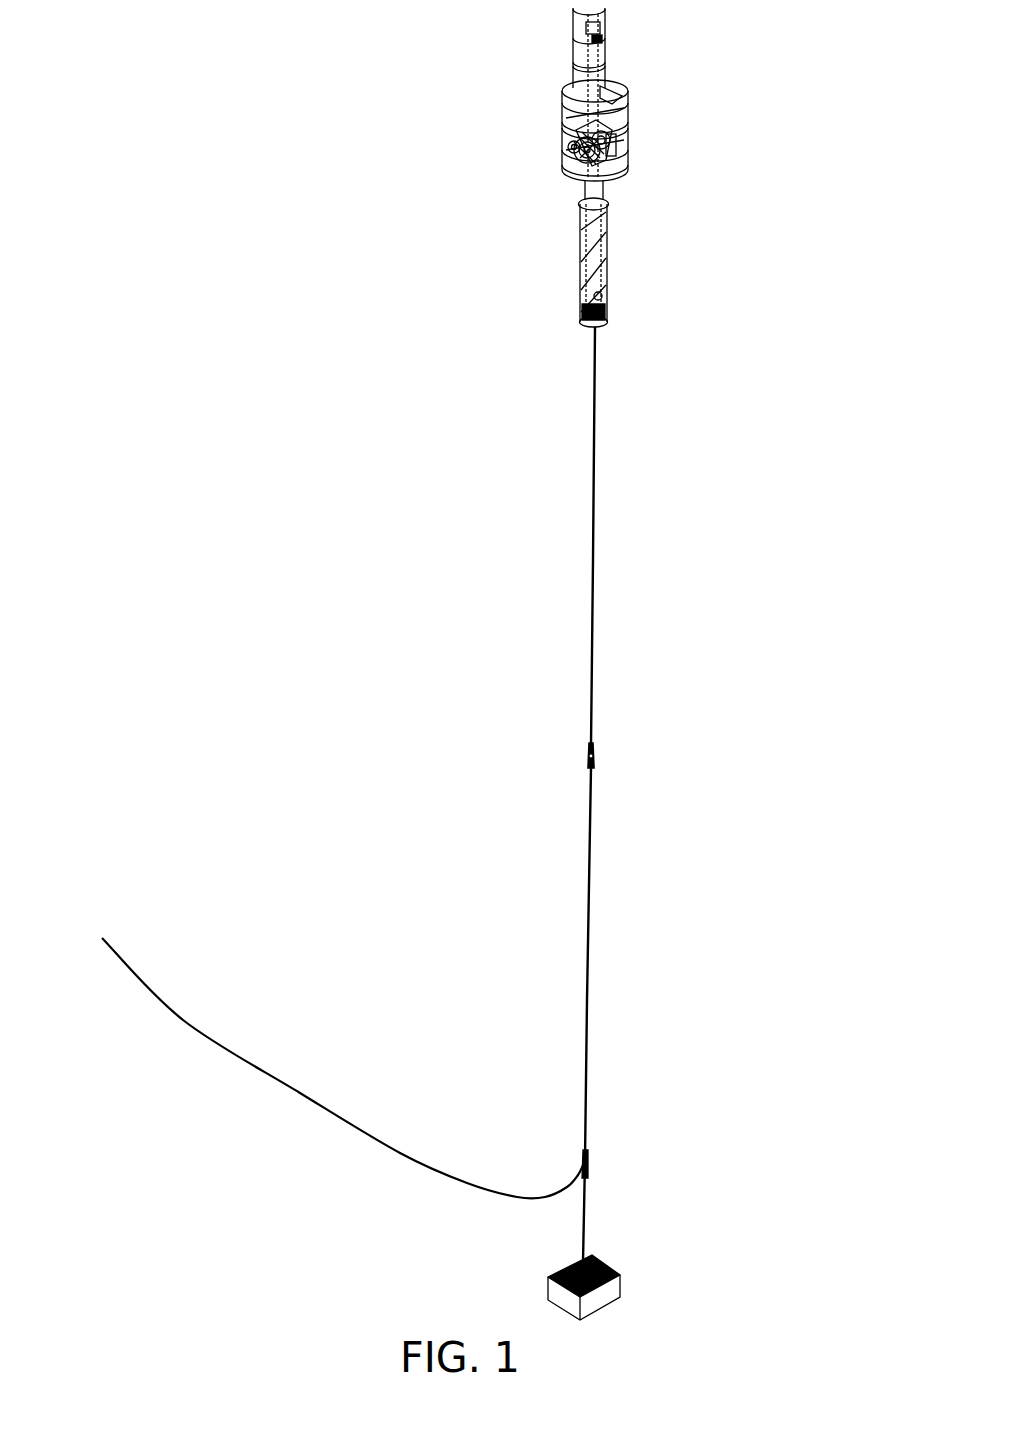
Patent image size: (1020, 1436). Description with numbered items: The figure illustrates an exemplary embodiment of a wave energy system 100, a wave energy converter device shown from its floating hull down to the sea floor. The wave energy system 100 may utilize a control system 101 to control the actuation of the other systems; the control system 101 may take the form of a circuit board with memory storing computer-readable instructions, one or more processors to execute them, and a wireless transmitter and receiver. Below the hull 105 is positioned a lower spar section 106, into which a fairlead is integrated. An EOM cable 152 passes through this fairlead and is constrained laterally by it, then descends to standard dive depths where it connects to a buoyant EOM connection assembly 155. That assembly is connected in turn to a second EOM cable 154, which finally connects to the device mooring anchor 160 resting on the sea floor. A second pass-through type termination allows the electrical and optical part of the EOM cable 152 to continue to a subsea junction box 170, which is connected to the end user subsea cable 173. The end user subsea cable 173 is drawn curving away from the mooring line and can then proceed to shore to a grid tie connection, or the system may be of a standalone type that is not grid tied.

The wave energy system 100 is at (352, 143).
The control system 101 is at (620, 145).
The hull 105 is at (562, 123).
The lower spar section 106 is at (562, 237).
The EOM cable 152 is at (610, 672).
The second EOM cable 154 is at (610, 927).
The buoyant EOM connection assembly 155 is at (578, 740).
The device mooring anchor 160 is at (630, 1247).
The subsea junction box 170 is at (597, 1153).
The end user subsea cable 173 is at (290, 1036).